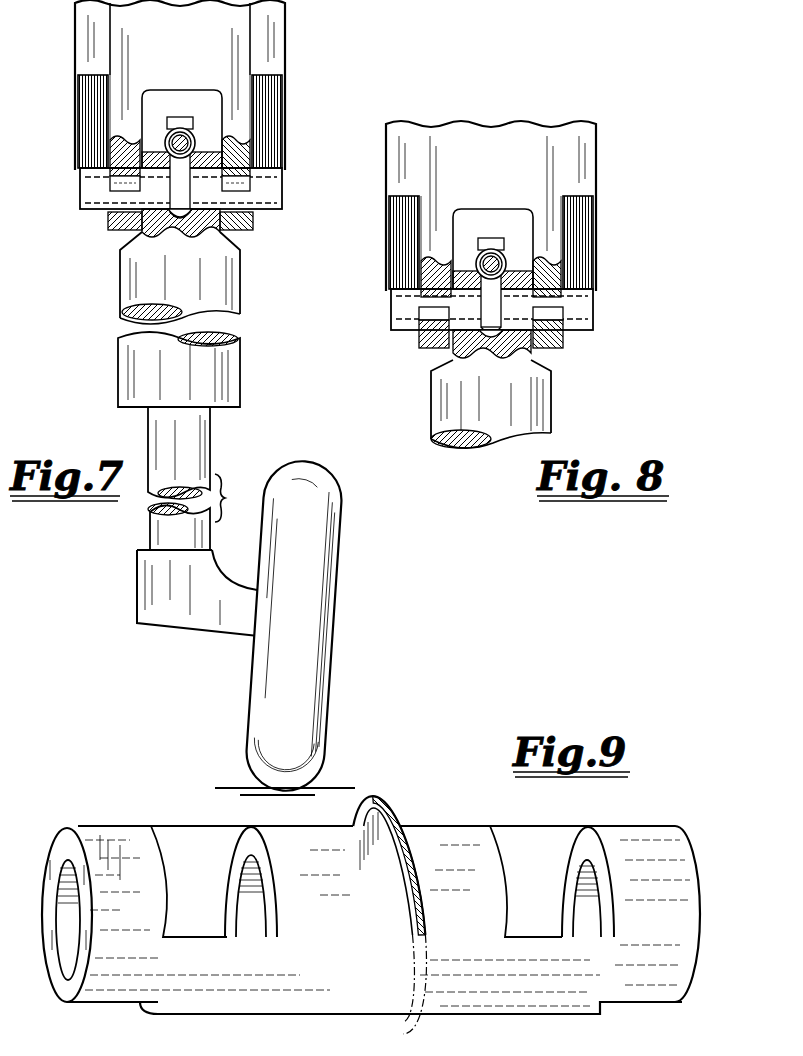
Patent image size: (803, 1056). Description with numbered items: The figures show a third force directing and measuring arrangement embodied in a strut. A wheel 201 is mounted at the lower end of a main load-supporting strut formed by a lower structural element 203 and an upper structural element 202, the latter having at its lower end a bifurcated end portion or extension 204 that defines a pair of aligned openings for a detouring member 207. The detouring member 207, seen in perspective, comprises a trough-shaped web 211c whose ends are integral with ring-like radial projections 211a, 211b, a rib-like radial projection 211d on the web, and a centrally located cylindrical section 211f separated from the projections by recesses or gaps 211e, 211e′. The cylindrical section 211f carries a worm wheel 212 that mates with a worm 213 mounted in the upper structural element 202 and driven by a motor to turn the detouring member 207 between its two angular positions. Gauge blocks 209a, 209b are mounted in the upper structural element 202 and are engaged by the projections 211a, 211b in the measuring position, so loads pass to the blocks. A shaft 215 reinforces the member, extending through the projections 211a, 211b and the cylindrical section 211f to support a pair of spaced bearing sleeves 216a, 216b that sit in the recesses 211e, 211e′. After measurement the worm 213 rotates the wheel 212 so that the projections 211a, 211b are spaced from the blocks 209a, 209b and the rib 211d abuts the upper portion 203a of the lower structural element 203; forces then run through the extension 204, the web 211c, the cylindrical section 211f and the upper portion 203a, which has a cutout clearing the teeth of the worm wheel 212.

In FIG. 7, the wheel 201 is at (315, 500).
In FIG. 7, the upper structural element 202 is at (252, 46).
In FIG. 8, the upper structural element 202 is at (522, 206).
In FIG. 7, the lower structural element 203 is at (215, 388).
In FIG. 8, the lower structural element 203 is at (456, 481).
In FIG. 7, the upper portion of the lower structural element 203a is at (148, 240).
In FIG. 8, the upper portion of the lower structural element 203a is at (524, 302).
In FIG. 7, the bifurcated end portion or extension 204 is at (127, 107).
In FIG. 8, the bifurcated end portion or extension 204 is at (541, 228).
In FIG. 7, the detouring member 207 is at (96, 224).
In FIG. 8, the detouring member 207 is at (453, 363).
In FIG. 9, the detouring member 207 is at (272, 1017).
In FIG. 7, the gauge block 209a is at (268, 118).
In FIG. 8, the gauge block 209a is at (620, 242).
In FIG. 7, the gauge block 209b is at (92, 113).
In FIG. 8, the gauge block 209b is at (376, 242).
In FIG. 7, the ring-like radial projection 211a is at (270, 214).
In FIG. 8, the ring-like radial projection 211a is at (620, 340).
In FIG. 9, the ring-like radial projection 211a is at (640, 838).
In FIG. 7, the ring-like radial projection 211b is at (84, 210).
In FIG. 8, the ring-like radial projection 211b is at (394, 341).
In FIG. 9, the ring-like radial projection 211b is at (112, 840).
In FIG. 9, the trough-shaped web 211c is at (335, 978).
In FIG. 9, the rib-like radial projection 211d is at (641, 1018).
In FIG. 7, the recess or gap 211e is at (244, 214).
In FIG. 8, the recess or gap 211e is at (578, 343).
In FIG. 9, the recess or gap 211e is at (532, 870).
In FIG. 7, the recess or gap 211e′ is at (120, 228).
In FIG. 8, the recess or gap 211e′ is at (406, 386).
In FIG. 9, the recess or gap 211e′ is at (190, 888).
In FIG. 7, the cylindrical section 211f is at (232, 228).
In FIG. 8, the cylindrical section 211f is at (489, 467).
In FIG. 9, the cylindrical section 211f is at (445, 838).
In FIG. 7, the worm wheel 212 is at (180, 185).
In FIG. 8, the worm wheel 212 is at (557, 283).
In FIG. 9, the worm wheel 212 is at (382, 800).
In FIG. 7, the worm 213 is at (178, 120).
In FIG. 8, the worm 213 is at (501, 228).
In FIG. 7, the shaft 215 is at (80, 207).
In FIG. 8, the shaft 215 is at (531, 309).
In FIG. 7, the bearing sleeve 216a is at (237, 190).
In FIG. 7, the bearing sleeve 216b is at (128, 178).